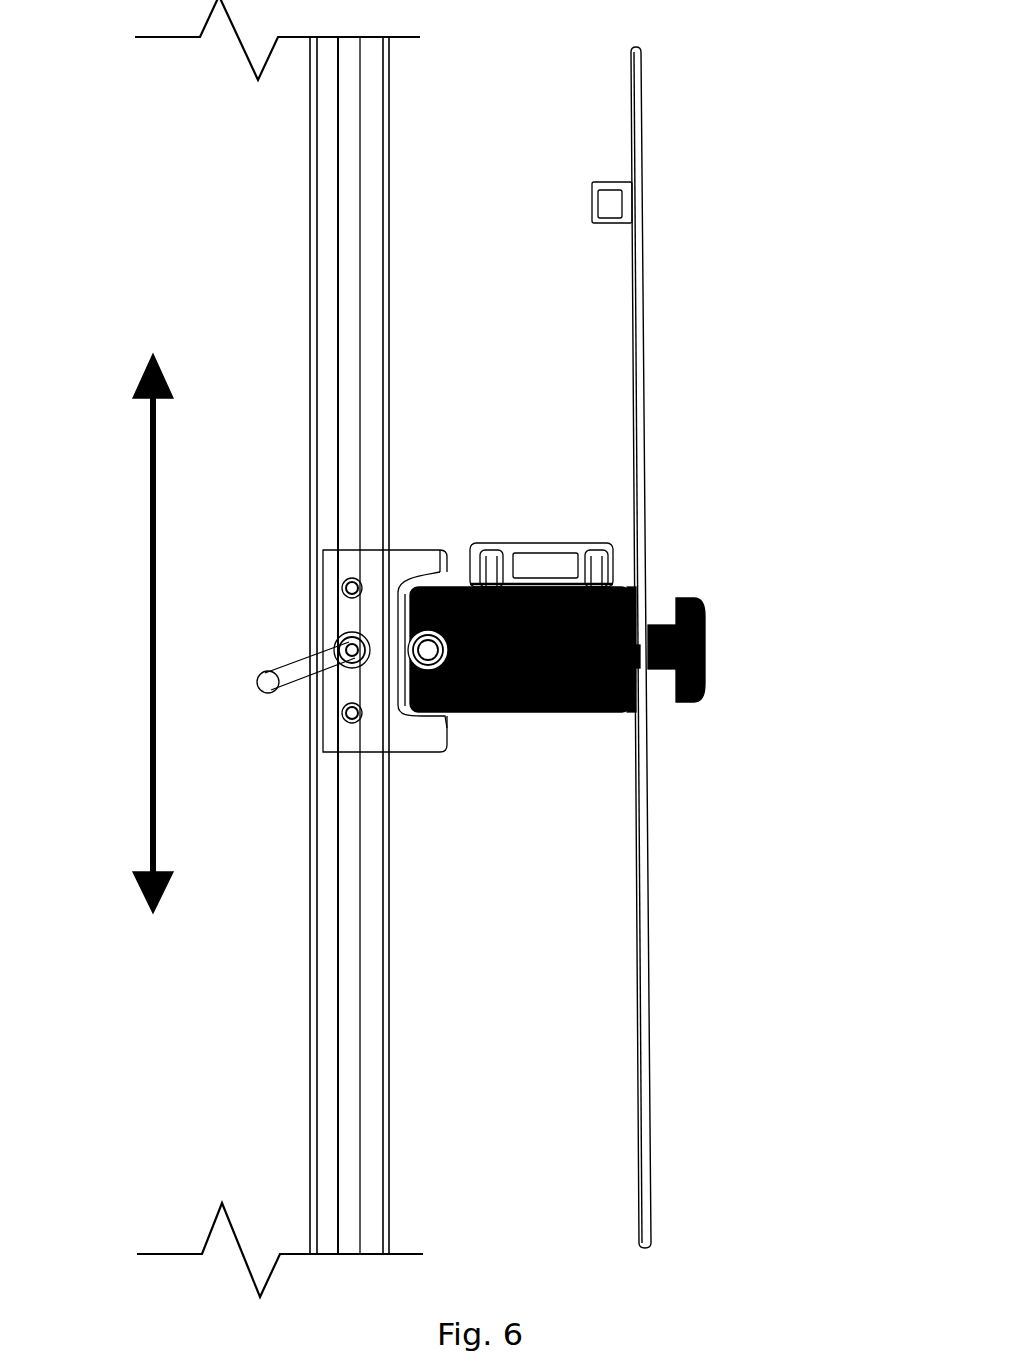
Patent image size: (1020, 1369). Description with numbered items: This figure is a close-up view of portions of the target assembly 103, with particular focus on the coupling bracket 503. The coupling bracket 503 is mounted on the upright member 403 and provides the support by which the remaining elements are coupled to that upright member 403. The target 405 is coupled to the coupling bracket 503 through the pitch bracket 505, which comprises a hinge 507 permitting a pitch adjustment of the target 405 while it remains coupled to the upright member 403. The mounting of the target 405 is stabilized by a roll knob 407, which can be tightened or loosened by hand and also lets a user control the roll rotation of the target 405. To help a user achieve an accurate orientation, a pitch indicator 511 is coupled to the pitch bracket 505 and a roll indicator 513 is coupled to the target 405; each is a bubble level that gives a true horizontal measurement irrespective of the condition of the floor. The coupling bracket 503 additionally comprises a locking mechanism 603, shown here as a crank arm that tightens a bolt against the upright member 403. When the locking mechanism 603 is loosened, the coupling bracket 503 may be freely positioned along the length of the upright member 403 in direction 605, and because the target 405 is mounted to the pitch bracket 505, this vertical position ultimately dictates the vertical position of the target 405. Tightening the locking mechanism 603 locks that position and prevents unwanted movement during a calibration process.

The target assembly 103 is at (828, 122).
The upright member 403 is at (392, 116).
The target 405 is at (642, 85).
The roll knob 407 is at (693, 605).
The coupling bracket 503 is at (326, 562).
The pitch bracket 505 is at (528, 712).
The hinge 507 is at (428, 630).
The pitch indicator 511 is at (553, 543).
The roll indicator 513 is at (612, 182).
The locking mechanism 603 is at (326, 656).
The direction 605 is at (152, 440).